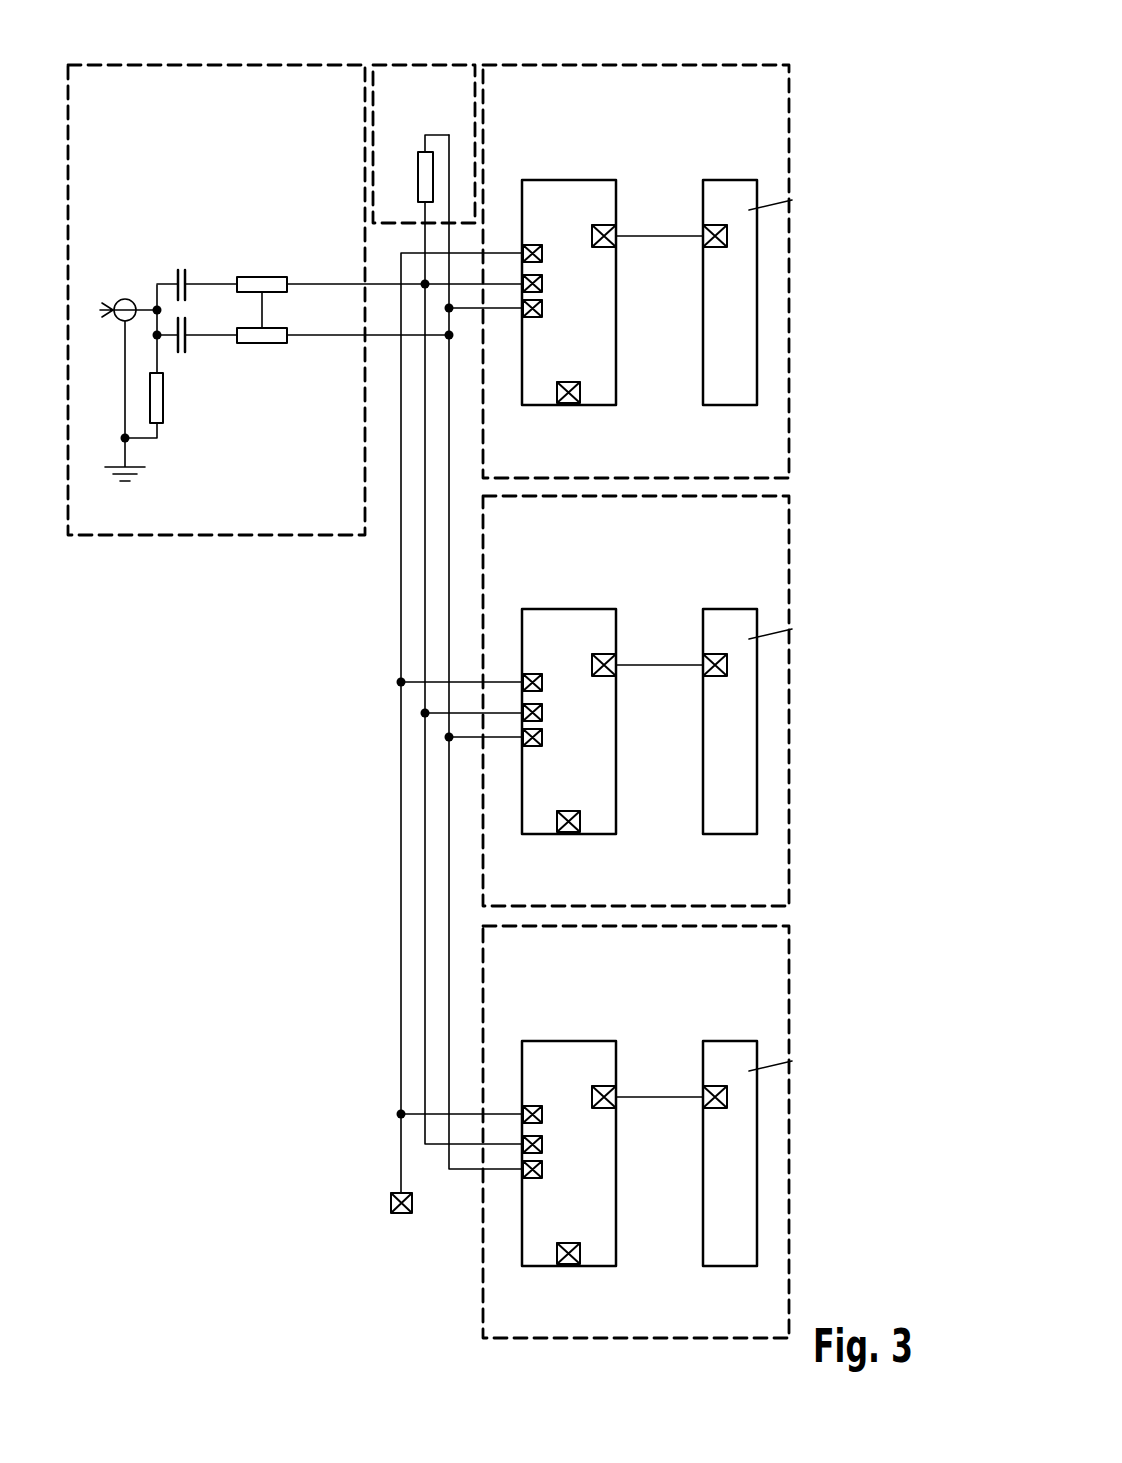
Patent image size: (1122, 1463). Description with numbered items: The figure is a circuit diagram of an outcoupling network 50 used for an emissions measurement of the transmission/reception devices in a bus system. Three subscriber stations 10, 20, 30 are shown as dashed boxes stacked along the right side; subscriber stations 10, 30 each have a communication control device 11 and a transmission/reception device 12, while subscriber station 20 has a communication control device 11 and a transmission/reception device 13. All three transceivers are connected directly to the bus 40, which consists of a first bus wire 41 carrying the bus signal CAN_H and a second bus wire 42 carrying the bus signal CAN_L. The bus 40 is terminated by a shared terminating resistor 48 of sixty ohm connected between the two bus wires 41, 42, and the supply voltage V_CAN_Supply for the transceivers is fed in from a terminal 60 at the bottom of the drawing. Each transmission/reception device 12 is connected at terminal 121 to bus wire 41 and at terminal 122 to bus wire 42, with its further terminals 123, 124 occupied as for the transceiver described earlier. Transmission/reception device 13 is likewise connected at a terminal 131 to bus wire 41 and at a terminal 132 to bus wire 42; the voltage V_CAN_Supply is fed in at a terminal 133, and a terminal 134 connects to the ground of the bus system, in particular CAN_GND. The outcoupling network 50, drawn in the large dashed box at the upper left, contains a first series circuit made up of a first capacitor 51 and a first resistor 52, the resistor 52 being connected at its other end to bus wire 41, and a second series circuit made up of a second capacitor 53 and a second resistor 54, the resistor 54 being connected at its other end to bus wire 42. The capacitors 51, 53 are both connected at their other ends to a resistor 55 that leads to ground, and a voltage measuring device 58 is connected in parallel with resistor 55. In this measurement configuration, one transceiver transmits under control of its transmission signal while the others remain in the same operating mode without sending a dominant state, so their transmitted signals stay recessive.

The subscriber station 10 is at (790, 88).
The subscriber station 20 is at (790, 518).
The subscriber station 30 is at (790, 948).
The communication control device 11 is at (730, 181).
The transmission/reception device 12 is at (567, 180).
The transmission/reception device 13 is at (612, 688).
The bus 40 is at (423, 1277).
The first bus wire 41 is at (472, 1172).
The second bus wire 42 is at (440, 1147).
The terminating resistor 48 is at (425, 65).
The outcoupling network 50 is at (207, 65).
The first capacitor 51 is at (190, 353).
The first resistor 52 is at (262, 344).
The second capacitor 53 is at (185, 268).
The second resistor 54 is at (262, 277).
The resistor 55 is at (163, 413).
The voltage measuring device 58 is at (125, 299).
The terminal 60 is at (401, 1215).
The terminal 121 is at (543, 308).
The terminal 122 is at (543, 284).
The terminal 123 is at (533, 245).
The terminal 124 is at (567, 382).
The terminal 131 is at (567, 751).
The terminal 132 is at (567, 722).
The terminal 133 is at (550, 653).
The terminal 134 is at (553, 795).